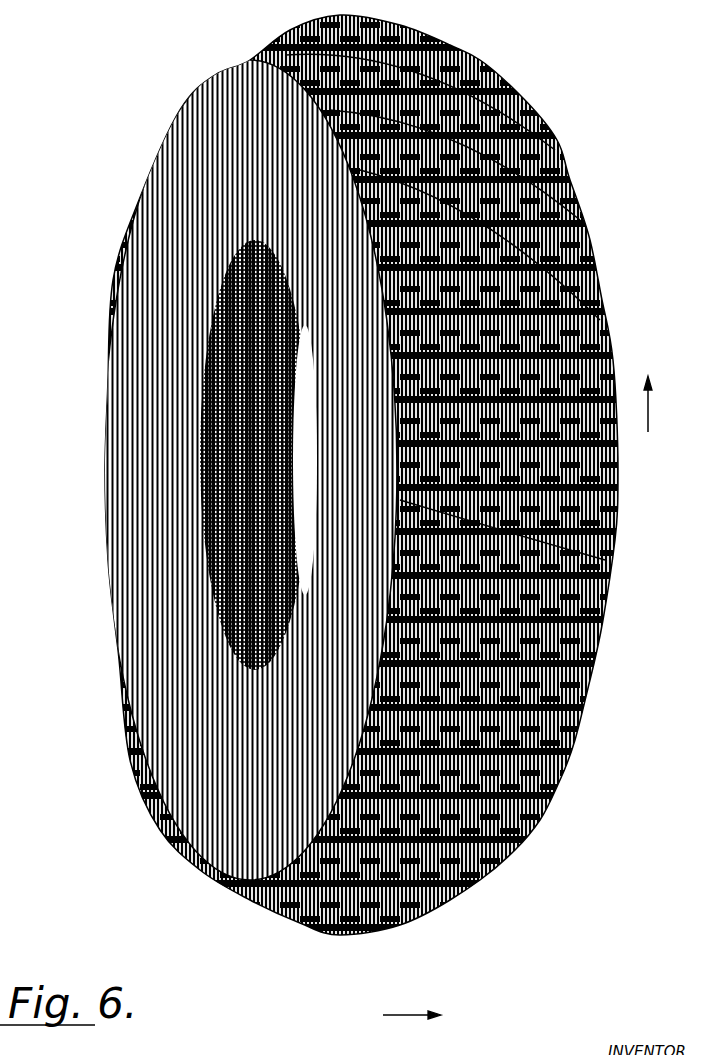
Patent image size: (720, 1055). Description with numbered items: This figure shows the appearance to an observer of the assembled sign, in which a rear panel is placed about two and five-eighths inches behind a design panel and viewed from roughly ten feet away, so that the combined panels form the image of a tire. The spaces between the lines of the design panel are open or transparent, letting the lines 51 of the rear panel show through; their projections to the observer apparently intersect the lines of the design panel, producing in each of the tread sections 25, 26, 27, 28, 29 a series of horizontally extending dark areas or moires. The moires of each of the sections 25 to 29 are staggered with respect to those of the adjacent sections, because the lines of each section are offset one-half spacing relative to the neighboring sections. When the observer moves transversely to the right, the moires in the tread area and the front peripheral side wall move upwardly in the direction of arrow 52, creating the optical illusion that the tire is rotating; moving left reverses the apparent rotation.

The tread section 25 is at (313, 933).
The tread section 26 is at (525, 523).
The tread section 27 is at (568, 180).
The tread section 28 is at (565, 327).
The tread section 29 is at (585, 231).
The lines of the rear panel 51 is at (402, 1018).
The arrow 52 is at (648, 410).